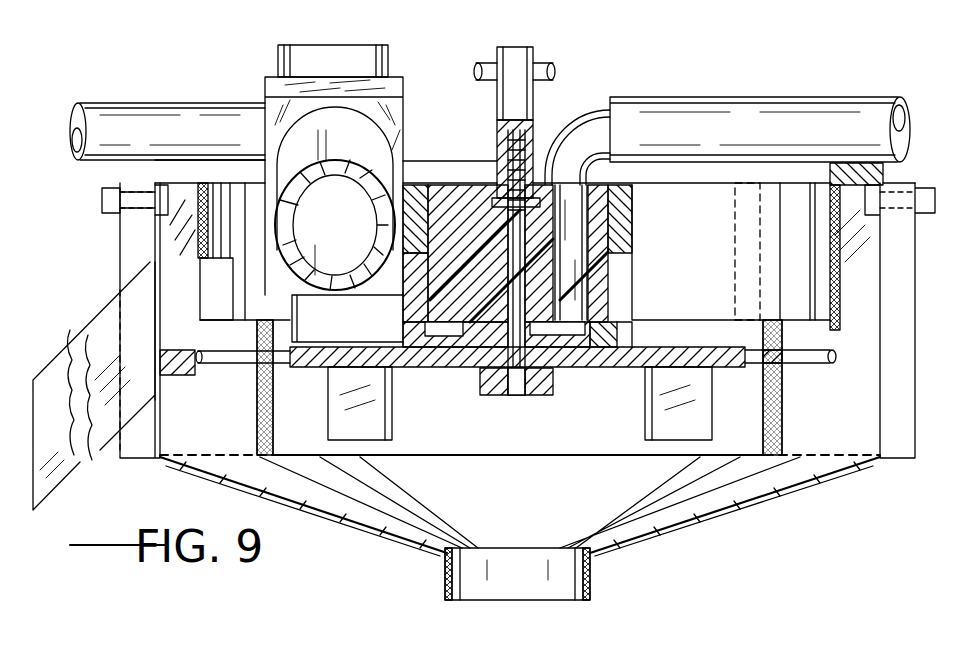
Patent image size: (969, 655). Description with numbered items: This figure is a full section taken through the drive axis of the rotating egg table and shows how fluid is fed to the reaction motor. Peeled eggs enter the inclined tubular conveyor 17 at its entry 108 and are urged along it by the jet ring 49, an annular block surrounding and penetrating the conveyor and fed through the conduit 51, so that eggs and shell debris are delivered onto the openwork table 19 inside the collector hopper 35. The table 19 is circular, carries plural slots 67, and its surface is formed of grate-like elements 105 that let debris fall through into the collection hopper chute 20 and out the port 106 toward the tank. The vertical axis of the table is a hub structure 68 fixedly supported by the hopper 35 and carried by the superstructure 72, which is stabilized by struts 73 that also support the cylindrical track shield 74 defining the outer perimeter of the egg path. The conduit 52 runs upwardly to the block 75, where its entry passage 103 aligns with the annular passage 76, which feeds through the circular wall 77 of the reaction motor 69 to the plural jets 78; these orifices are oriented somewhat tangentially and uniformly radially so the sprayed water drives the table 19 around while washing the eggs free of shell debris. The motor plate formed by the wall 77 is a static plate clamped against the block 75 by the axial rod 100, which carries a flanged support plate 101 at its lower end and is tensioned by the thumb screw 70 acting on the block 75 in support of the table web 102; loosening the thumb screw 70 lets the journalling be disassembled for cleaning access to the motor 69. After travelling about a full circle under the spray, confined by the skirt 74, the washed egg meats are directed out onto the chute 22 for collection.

The tubular conveyor 17 is at (312, 146).
The openwork table 19 is at (720, 430).
The collection hopper chute 20 is at (655, 546).
The chute 22 is at (87, 332).
The collector hopper 35 is at (880, 247).
The jet ring 49 is at (395, 117).
The conduit 51 is at (125, 104).
The conduit 52 is at (675, 104).
The slots 67 is at (826, 362).
The hub structure 68 is at (545, 131).
The reaction motor 69 is at (650, 316).
The thumb screw 70 is at (517, 47).
The superstructure 72 is at (415, 188).
The struts 73 is at (735, 252).
The cylindrical track shield 74 is at (840, 275).
The block 75 is at (620, 278).
The annular passage 76 is at (438, 335).
The circular wall 77 is at (400, 333).
The jets 78 is at (630, 332).
The axial rod 100 is at (512, 393).
The flanged support plate 101 is at (490, 393).
The table web 102 is at (626, 370).
The entry passage 103 is at (632, 216).
The grate-like elements 105 is at (793, 350).
The port 106 is at (590, 570).
The entry 108 is at (327, 42).